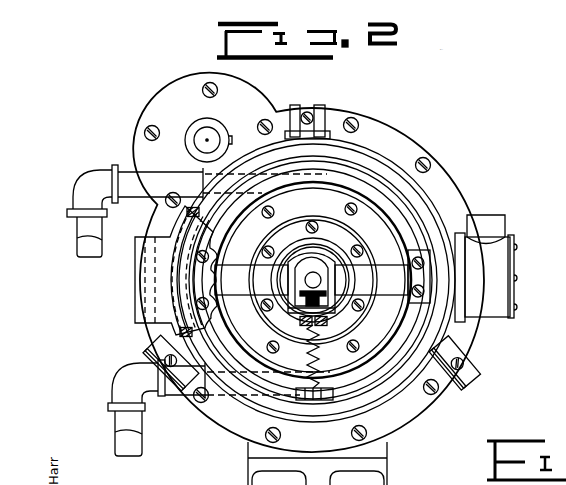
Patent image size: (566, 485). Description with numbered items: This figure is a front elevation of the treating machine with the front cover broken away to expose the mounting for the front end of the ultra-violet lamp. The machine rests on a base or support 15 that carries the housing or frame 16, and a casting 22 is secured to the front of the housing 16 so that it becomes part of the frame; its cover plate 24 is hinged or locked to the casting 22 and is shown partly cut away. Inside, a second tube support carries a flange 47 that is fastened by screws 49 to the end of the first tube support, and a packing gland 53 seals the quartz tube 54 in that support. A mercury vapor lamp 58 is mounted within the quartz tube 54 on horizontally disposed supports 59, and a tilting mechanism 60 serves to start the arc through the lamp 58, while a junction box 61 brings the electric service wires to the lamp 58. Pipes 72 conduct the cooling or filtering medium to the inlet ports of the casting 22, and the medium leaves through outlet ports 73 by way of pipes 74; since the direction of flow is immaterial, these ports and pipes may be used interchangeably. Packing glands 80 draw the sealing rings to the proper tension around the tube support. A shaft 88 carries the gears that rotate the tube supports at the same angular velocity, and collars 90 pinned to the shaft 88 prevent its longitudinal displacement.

The base or support 15 is at (248, 472).
The housing or frame 16 is at (248, 447).
The casting 22 is at (162, 104).
The cover plate 24 is at (186, 282).
The flange 47 is at (358, 230).
The screws 49 is at (357, 222).
The packing gland 53 is at (333, 228).
The quartz tube 54 is at (311, 246).
The mercury vapor lamp 58 is at (322, 282).
The horizontally disposed supports 59 is at (322, 276).
The tilting mechanism 60 is at (330, 296).
The junction box 61 is at (506, 290).
The pipes 72 is at (78, 250).
The outlet ports 73 is at (283, 175).
The pipes 74 is at (78, 227).
The packing glands 80 is at (415, 218).
The shaft 88 is at (197, 136).
The collars 90 is at (224, 138).